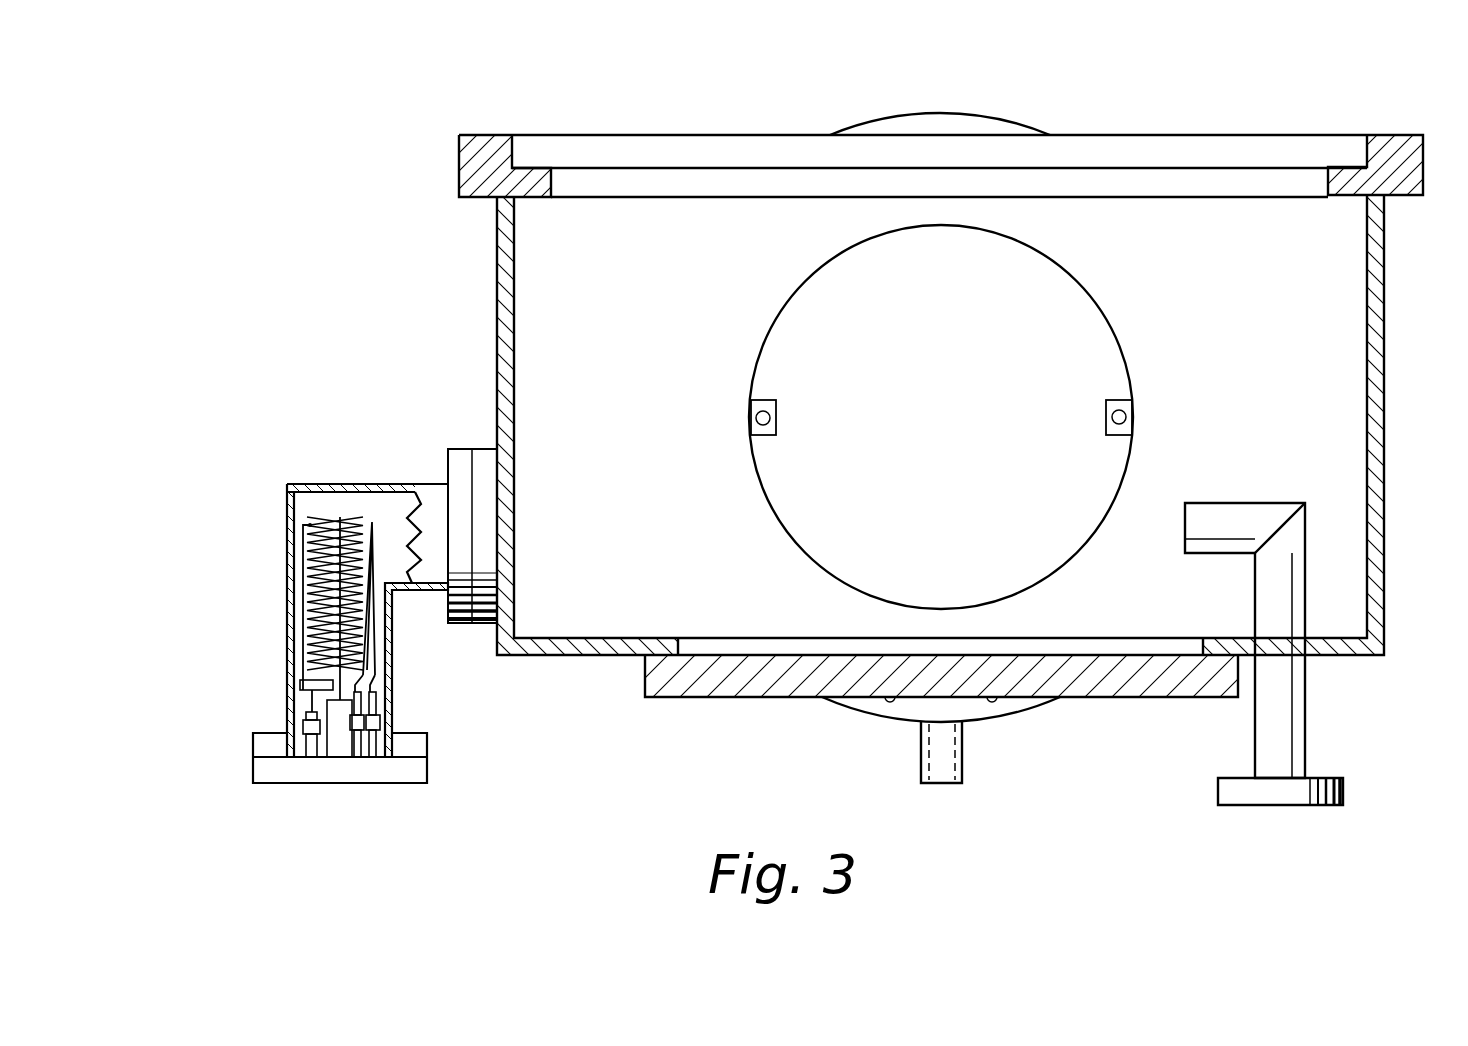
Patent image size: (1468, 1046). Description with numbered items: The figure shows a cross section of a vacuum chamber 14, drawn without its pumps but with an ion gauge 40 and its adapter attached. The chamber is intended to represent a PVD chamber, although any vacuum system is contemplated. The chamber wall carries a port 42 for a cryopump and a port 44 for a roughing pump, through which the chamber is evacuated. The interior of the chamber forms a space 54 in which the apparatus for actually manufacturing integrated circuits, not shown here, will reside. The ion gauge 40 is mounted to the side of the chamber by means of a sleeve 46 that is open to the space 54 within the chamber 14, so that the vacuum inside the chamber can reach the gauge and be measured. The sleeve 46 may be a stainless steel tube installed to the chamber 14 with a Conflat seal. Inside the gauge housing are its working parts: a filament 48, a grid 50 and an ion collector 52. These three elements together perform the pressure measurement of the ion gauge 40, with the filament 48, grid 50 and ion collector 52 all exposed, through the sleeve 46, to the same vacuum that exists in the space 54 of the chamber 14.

The vacuum chamber 14 is at (1385, 389).
The ion gauge 40 is at (304, 625).
The port for a cryopump 42 is at (934, 112).
The port for a roughing pump 44 is at (1305, 722).
The sleeve 46 is at (380, 484).
The filament 48 is at (378, 658).
The grid 50 is at (300, 652).
The ion collector 52 is at (337, 580).
The space within chamber 54 is at (958, 438).